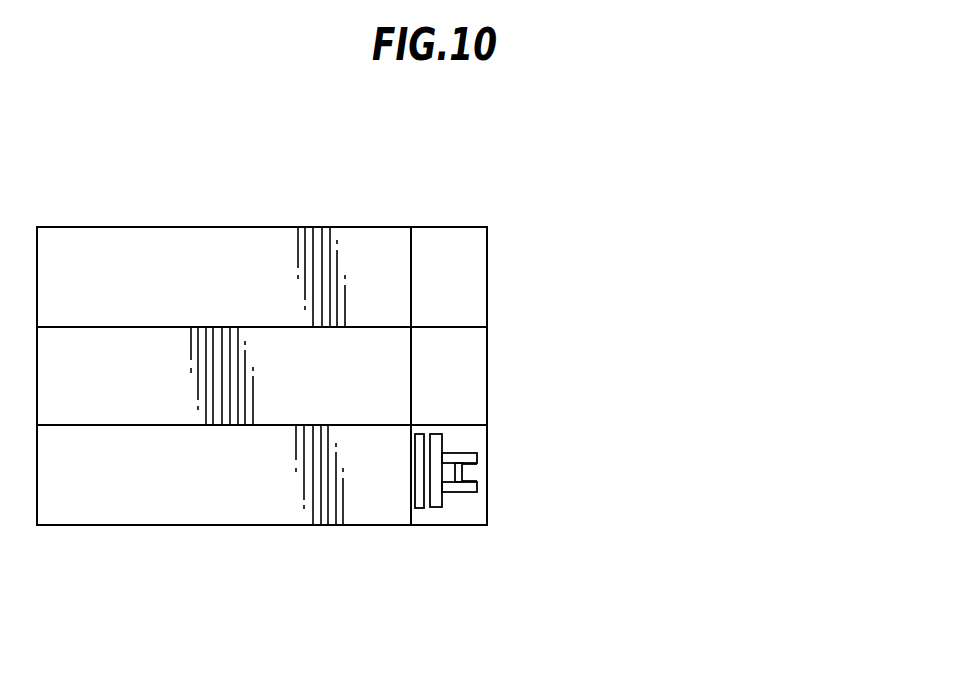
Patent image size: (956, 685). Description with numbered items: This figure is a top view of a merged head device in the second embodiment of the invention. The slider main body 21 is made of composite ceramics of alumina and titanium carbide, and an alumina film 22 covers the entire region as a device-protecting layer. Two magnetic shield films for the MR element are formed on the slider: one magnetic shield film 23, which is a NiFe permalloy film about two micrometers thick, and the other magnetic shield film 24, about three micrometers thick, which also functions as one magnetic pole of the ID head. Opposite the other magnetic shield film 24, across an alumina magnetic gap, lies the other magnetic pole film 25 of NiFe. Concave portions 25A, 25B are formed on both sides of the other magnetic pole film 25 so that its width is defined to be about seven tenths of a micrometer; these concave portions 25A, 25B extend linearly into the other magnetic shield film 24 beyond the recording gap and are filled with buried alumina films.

The slider main body 21 is at (81, 246).
The alumina film 22 is at (483, 356).
The one magnetic shield film 23 is at (419, 507).
The other magnetic shield film 24 is at (438, 505).
The other magnetic pole film 25 is at (460, 468).
The concave portion 25A is at (476, 489).
The concave portion 25B is at (474, 456).